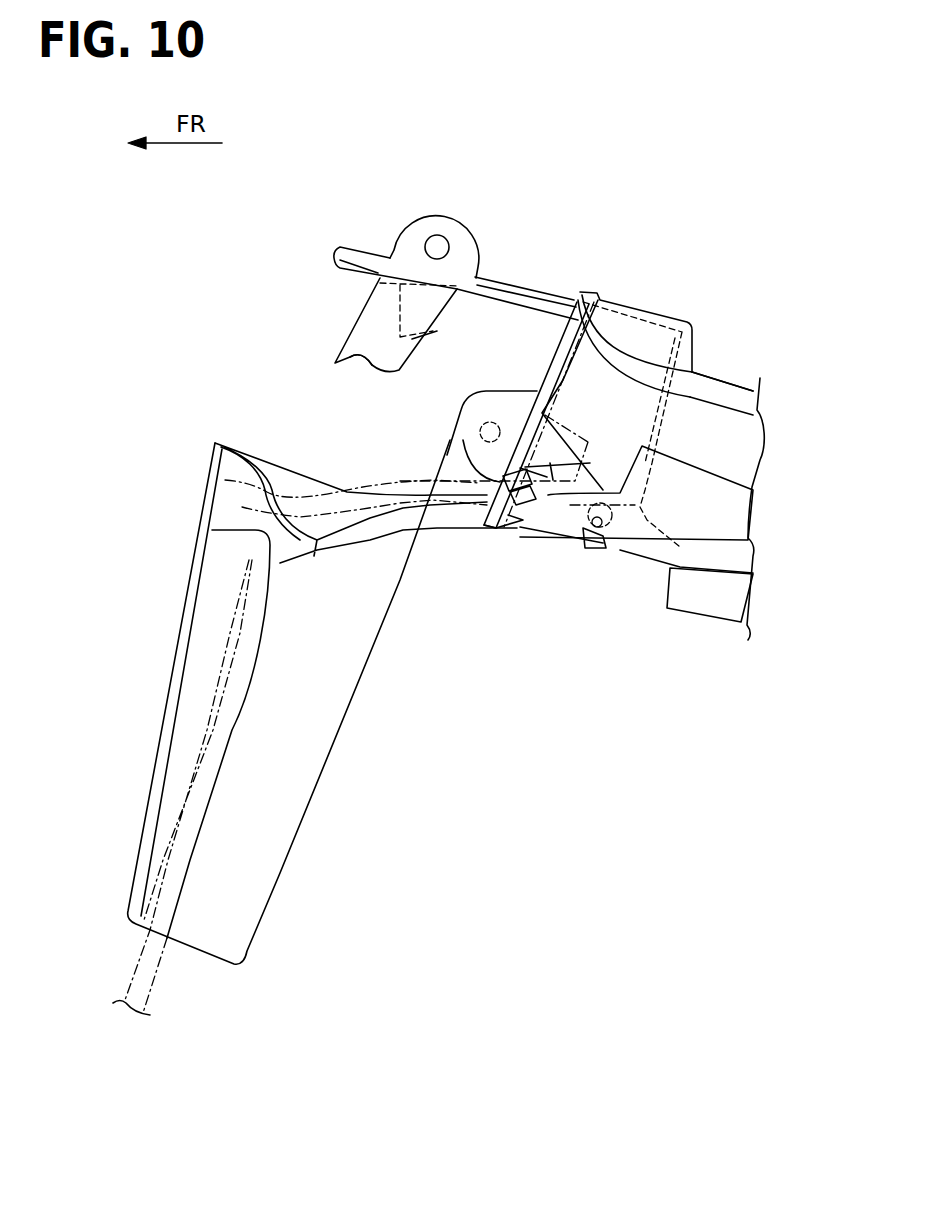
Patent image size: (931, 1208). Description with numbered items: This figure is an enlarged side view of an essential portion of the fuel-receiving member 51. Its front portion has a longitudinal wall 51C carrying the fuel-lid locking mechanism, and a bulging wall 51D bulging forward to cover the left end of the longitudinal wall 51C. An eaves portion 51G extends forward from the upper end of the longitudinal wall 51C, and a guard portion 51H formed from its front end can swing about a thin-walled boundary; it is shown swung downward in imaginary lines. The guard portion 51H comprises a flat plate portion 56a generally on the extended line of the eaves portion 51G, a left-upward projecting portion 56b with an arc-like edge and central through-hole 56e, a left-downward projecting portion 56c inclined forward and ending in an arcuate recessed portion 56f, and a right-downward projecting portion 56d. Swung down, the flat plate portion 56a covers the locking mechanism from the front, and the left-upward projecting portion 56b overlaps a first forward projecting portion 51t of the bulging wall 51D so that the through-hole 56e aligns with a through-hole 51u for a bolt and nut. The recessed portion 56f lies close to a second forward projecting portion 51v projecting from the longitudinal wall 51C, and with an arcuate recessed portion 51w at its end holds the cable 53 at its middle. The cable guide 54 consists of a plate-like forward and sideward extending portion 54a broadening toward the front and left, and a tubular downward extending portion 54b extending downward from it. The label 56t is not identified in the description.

The fuel-receiving member 51 is at (249, 290).
The guard portion 51H is at (372, 247).
The eaves portion 51G is at (640, 310).
The bulging wall 51D is at (617, 357).
The longitudinal wall 51C is at (697, 348).
The first forward projecting portion 51t is at (447, 455).
The through-hole 51u is at (486, 432).
The second forward projecting portion 51v is at (643, 578).
The arcuate recessed portion 51w is at (602, 545).
The flat plate portion 56a is at (518, 278).
The left-upward projecting portion 56b is at (416, 226).
The left-downward projecting portion 56c is at (367, 320).
The right-downward projecting portion 56d is at (433, 333).
The through-hole 56e is at (445, 240).
The arcuate recessed portion 56f is at (360, 362).
The bracket lower tab 56t is at (590, 543).
The cable 53 is at (550, 527).
The cable guide 54 is at (285, 880).
The forward and sideward extending portion 54a is at (443, 520).
The downward extending portion 54b is at (340, 735).